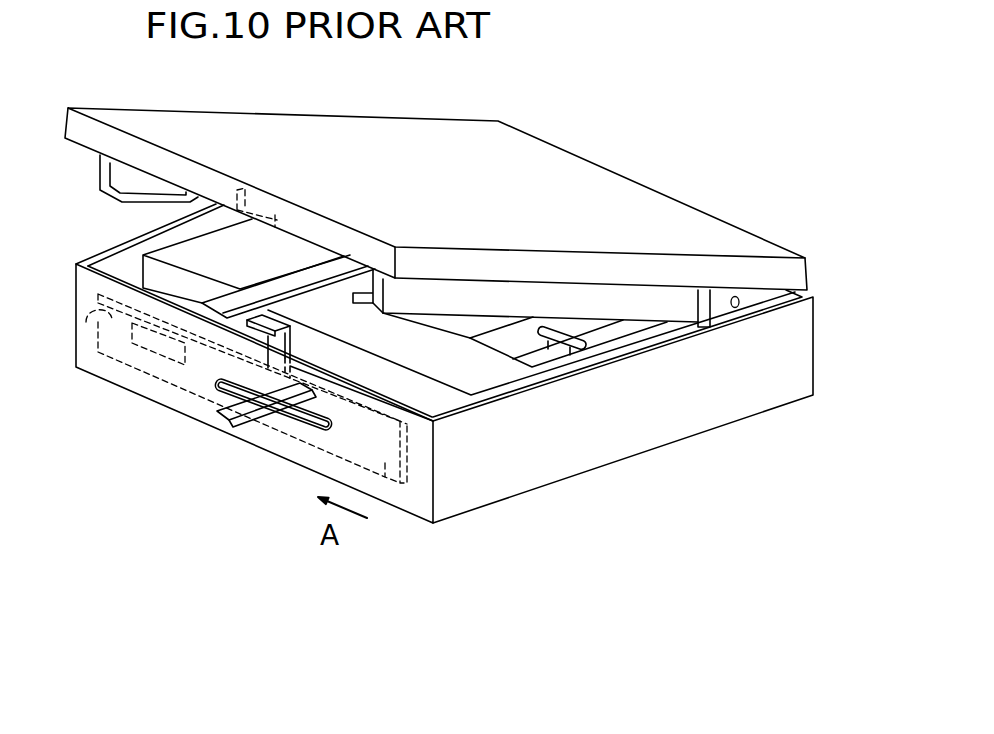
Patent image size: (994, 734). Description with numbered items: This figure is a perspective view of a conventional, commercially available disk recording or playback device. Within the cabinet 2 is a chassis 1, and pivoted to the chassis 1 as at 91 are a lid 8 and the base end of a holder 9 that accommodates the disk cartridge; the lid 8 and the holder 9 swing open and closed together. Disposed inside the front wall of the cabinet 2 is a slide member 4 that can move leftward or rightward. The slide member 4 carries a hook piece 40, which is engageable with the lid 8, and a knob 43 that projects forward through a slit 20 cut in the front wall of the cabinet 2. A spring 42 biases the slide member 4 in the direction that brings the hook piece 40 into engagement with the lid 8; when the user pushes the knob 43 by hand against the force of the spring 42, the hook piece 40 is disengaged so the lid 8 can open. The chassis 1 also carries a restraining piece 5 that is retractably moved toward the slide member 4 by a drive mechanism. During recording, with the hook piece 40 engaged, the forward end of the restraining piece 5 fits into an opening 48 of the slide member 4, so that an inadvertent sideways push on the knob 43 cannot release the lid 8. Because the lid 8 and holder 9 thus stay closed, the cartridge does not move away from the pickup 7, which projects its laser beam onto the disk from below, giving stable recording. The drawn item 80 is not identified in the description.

The chassis 1 is at (520, 382).
The cabinet 2 is at (742, 407).
The slide member 4 is at (385, 477).
The restraining piece 5 is at (245, 296).
The pickup 7 is at (587, 325).
The lid 8 is at (566, 151).
The holder 9 is at (603, 293).
The slit 20 is at (316, 413).
The hook piece 40 is at (262, 350).
The spring 42 is at (96, 326).
The knob 43 is at (243, 412).
The opening 48 is at (160, 336).
The engaging projection 80 is at (262, 200).
The pivot 91 is at (739, 296).